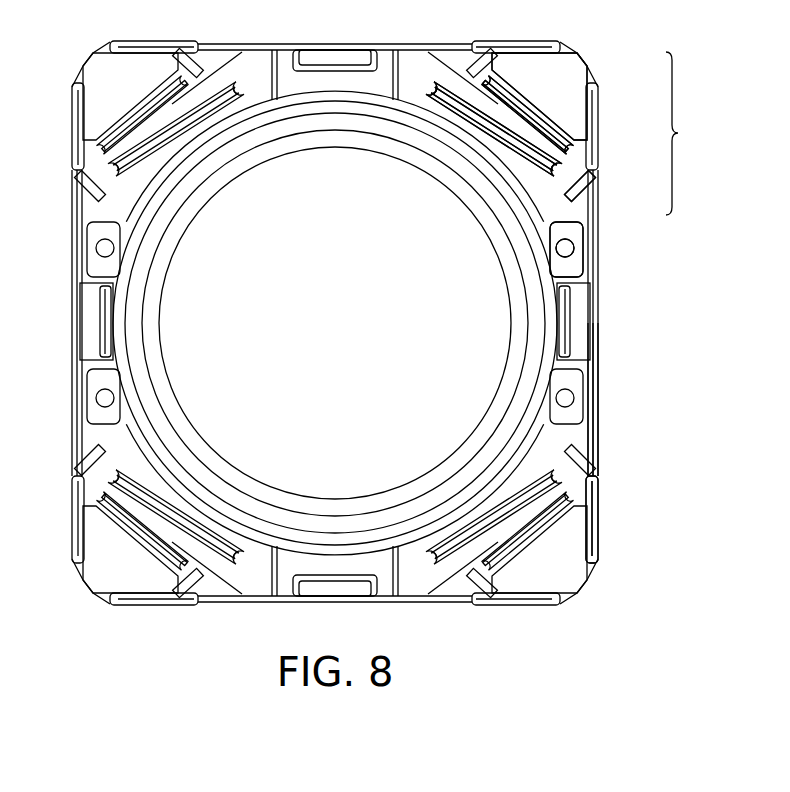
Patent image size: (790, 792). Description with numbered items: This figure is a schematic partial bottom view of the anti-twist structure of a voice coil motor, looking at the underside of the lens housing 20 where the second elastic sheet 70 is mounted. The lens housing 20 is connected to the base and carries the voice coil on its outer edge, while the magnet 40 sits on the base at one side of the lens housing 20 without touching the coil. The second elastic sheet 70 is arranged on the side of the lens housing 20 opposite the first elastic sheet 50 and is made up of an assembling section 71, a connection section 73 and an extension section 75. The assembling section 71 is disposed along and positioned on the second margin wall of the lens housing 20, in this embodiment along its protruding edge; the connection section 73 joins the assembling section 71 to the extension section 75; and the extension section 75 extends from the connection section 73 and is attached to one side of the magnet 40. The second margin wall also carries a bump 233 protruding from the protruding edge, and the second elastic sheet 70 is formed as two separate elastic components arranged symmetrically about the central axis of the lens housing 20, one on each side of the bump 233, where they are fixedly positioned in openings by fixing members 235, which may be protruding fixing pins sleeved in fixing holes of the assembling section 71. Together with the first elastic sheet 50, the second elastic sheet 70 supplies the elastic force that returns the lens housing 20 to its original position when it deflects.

The lens housing 20 is at (535, 345).
The magnet 40 is at (596, 497).
The first elastic sheet 50 is at (598, 456).
The second elastic sheet 70 is at (689, 133).
The assembling section 71 is at (540, 207).
The connection section 73 is at (558, 130).
The extension section 75 is at (570, 66).
The bump 233 is at (578, 305).
The fixing member 235 is at (566, 248).